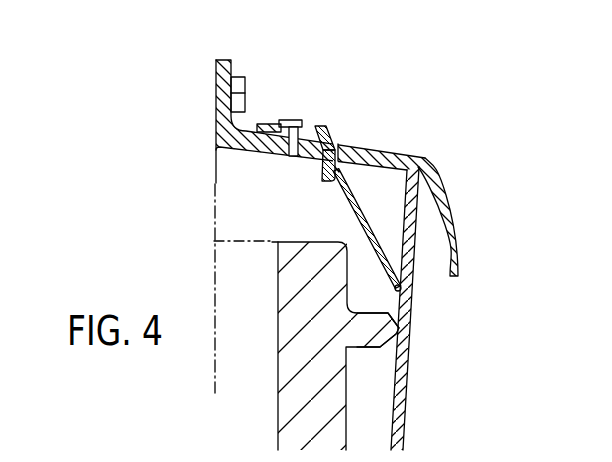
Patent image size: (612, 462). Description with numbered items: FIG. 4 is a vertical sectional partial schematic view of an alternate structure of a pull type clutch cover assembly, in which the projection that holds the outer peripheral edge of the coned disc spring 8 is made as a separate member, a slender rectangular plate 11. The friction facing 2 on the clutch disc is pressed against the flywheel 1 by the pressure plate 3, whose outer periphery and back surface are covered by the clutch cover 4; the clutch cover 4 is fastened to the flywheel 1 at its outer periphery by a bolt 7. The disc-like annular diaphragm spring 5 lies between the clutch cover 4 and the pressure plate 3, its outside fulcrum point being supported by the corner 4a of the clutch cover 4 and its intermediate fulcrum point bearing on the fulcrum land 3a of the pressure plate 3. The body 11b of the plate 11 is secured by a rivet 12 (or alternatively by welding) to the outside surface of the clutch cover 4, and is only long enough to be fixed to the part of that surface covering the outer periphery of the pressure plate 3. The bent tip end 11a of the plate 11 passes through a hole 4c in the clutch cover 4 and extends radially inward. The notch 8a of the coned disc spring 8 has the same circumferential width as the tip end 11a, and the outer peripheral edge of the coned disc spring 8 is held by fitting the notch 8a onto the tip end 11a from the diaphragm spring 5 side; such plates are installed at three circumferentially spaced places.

The flywheel 1 is at (202, 190).
The friction facing 2 is at (230, 372).
The pressure plate 3 is at (292, 388).
The fulcrum land 3a is at (375, 341).
The clutch cover 4 is at (337, 115).
The corner 4a is at (428, 160).
The hole 4c is at (399, 151).
The diaphragm spring 5 is at (408, 360).
The bolt 7 is at (240, 92).
The coned disc spring 8 is at (357, 214).
The notch 8a is at (336, 166).
The slender rectangular plate 11 is at (322, 128).
The bent tip end 11a is at (323, 170).
The body 11b is at (259, 126).
The rivet 12 is at (290, 119).